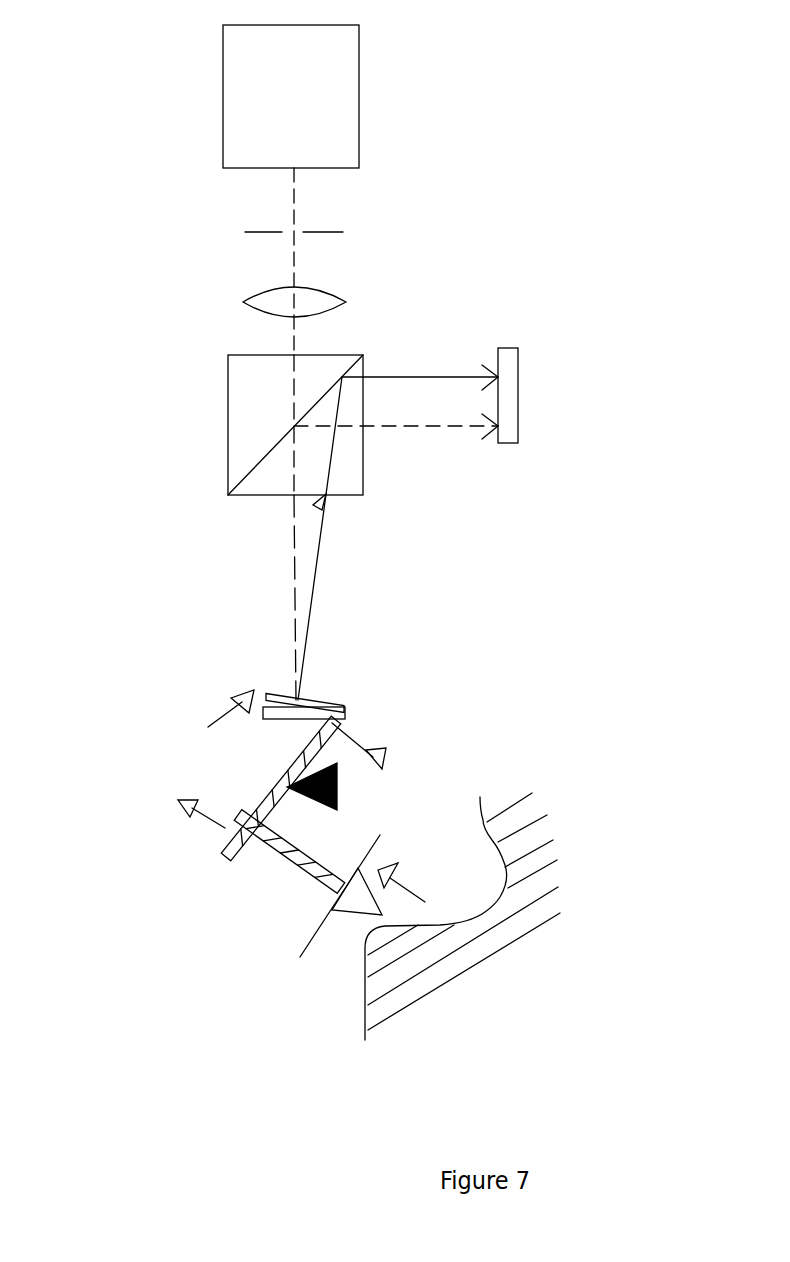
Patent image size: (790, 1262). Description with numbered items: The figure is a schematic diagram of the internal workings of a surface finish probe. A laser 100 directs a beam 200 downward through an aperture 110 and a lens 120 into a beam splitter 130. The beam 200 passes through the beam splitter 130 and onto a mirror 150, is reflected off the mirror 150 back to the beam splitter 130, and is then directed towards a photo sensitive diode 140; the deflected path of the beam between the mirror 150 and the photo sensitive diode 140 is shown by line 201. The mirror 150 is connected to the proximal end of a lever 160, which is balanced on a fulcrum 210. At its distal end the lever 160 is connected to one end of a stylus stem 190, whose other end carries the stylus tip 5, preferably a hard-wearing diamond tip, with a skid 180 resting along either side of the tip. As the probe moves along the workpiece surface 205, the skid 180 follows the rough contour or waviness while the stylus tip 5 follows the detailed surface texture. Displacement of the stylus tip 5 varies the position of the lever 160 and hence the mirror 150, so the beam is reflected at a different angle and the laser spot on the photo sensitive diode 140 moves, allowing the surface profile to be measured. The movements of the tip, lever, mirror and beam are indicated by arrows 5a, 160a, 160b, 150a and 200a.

The laser 100 is at (252, 77).
The aperture 110 is at (232, 228).
The lens 120 is at (230, 290).
The beam splitter 130 is at (227, 408).
The photo sensitive diode 140 is at (520, 433).
The mirror 150 is at (340, 707).
The arrow showing mirror movement 150a is at (230, 697).
The lever 160 is at (217, 855).
The arrow showing lever movement 160a is at (207, 823).
The arrow showing lever movement 160b is at (368, 748).
The skid 180 is at (292, 963).
The stylus stem 190 is at (273, 855).
The beam 200 is at (294, 203).
The arrow showing beam movement 200a is at (305, 507).
The deflected beam path line 201 is at (315, 558).
The workpiece surface 205 is at (562, 853).
The fulcrum 210 is at (350, 792).
The stylus tip 5 is at (358, 912).
The arrow showing stylus tip movement 5a is at (412, 887).